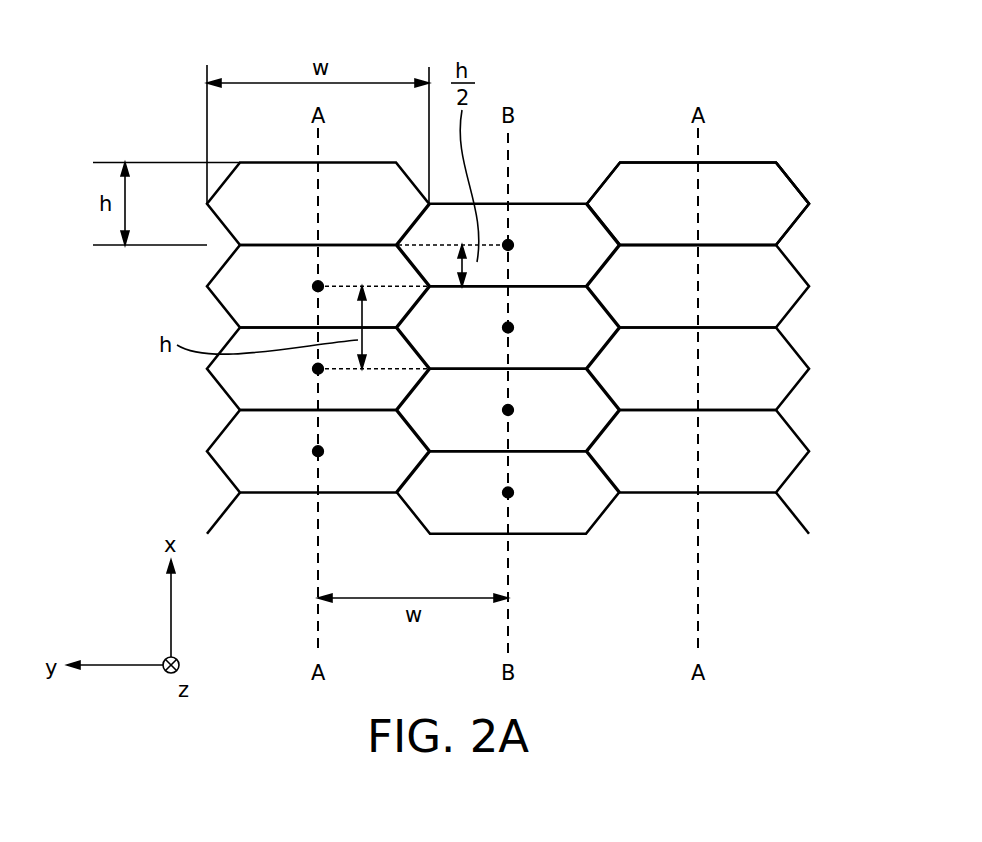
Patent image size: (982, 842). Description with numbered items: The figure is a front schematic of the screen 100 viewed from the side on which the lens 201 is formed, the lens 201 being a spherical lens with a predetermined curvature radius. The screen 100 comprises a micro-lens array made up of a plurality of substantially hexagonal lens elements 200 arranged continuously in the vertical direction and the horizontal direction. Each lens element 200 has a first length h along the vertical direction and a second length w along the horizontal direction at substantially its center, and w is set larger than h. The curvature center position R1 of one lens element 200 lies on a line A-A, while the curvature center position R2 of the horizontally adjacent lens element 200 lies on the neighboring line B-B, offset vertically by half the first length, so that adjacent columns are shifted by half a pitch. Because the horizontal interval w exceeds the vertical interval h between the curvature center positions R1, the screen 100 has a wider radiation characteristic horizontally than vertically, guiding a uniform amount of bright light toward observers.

The screen 100 is at (158, 124).
The lens element 200 is at (745, 162).
The lens 201 is at (787, 187).
The curvature center position R1 is at (316, 287).
The curvature center position R2 is at (512, 242).